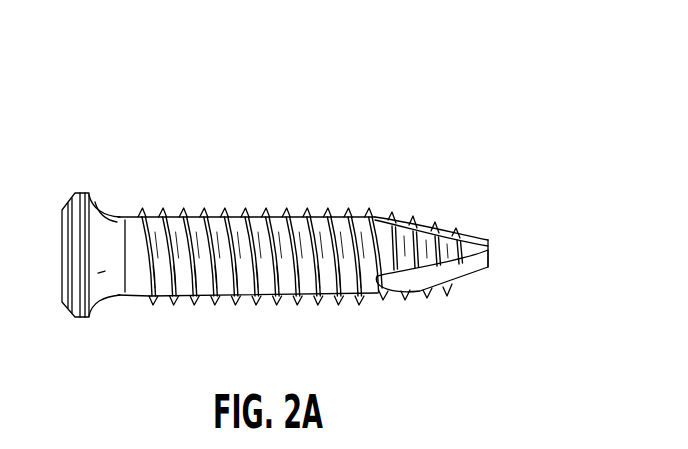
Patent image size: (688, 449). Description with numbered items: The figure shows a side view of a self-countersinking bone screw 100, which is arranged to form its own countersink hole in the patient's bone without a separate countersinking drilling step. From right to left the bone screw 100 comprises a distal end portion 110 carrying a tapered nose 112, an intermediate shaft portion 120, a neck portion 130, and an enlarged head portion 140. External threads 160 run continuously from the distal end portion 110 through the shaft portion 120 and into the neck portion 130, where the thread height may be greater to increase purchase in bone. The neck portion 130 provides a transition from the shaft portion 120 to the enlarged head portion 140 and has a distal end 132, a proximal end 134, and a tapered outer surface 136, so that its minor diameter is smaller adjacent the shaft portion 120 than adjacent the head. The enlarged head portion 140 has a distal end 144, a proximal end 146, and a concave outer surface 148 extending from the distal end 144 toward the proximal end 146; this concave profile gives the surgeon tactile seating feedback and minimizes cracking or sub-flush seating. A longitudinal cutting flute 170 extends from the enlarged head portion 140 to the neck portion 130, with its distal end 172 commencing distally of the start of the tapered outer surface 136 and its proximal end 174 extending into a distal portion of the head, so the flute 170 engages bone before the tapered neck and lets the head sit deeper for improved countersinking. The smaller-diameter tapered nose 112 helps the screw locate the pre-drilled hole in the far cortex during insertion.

The bone screw 100 is at (528, 86).
The distal end portion 110 is at (487, 141).
The tapered nose 112 is at (485, 247).
The intermediate shaft portion 120 is at (372, 141).
The neck portion 130 is at (205, 141).
The distal end 132 is at (168, 217).
The proximal end 134 is at (167, 229).
The tapered outer surface 136 is at (166, 303).
The enlarged head portion 140 is at (123, 141).
The distal end 144 is at (123, 214).
The proximal end 146 is at (100, 200).
The concave outer surface 148 is at (100, 303).
The external threads 160 is at (322, 298).
The cutting flutes 170 is at (117, 220).
The distal end 172 is at (187, 208).
The proximal end 174 is at (106, 212).